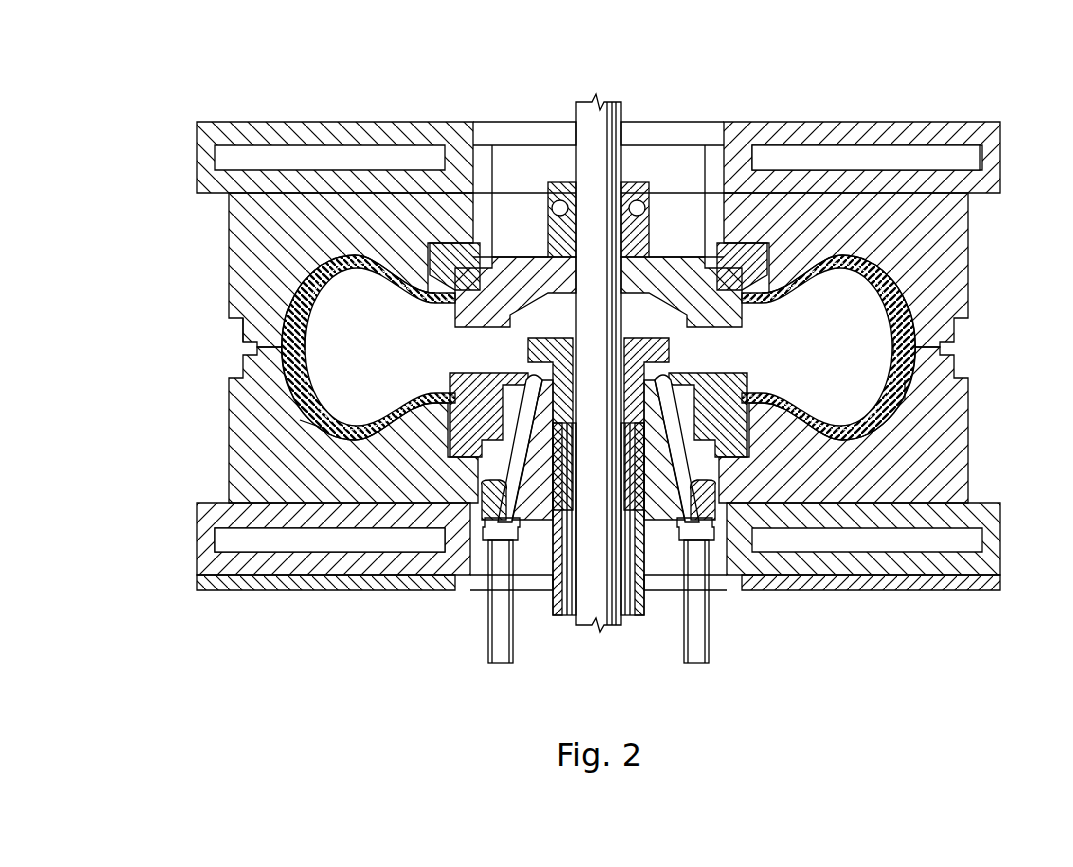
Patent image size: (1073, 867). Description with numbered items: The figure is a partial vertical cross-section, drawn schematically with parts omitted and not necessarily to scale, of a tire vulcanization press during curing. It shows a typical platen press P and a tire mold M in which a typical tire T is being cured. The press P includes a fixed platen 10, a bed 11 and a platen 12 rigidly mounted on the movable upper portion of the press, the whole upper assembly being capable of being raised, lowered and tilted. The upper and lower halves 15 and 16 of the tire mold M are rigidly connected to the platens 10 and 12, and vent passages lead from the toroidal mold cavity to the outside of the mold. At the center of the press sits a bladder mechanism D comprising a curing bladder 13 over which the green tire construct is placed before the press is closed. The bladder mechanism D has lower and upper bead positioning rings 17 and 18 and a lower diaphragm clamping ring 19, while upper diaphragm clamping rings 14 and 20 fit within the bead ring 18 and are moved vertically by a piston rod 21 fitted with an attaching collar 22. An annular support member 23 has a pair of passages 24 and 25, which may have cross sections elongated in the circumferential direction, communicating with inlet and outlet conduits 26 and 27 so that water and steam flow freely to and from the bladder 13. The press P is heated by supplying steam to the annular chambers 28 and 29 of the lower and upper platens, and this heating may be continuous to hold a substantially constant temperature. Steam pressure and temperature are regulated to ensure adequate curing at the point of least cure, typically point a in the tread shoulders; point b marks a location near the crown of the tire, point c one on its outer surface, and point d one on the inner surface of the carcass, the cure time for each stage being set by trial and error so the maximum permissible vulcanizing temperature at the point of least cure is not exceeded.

The fixed platen 10 is at (197, 541).
The bed 11 is at (958, 592).
The platen 12 is at (197, 153).
The curing bladder 13 is at (308, 367).
The upper diaphragm clamping ring 14 is at (455, 310).
The upper mold half 15 is at (229, 484).
The lower mold half 16 is at (229, 257).
The lower bead positioning ring 17 is at (432, 395).
The upper bead positioning ring 18 is at (430, 255).
The lower diaphragm clamping ring 19 is at (490, 373).
The upper diaphragm clamping ring 20 is at (492, 250).
The piston rod 21 is at (576, 107).
The attaching collar 22 is at (632, 182).
The annular support member 23 is at (542, 508).
The passage 24 is at (502, 485).
The passage 25 is at (712, 465).
The inlet conduit 26 is at (488, 648).
The outlet conduit 27 is at (682, 648).
The annular chamber 28 is at (246, 543).
The annular chamber 29 is at (958, 157).
The platen press P is at (190, 120).
The tire mold M is at (972, 350).
The bladder mechanism D is at (748, 356).
The tire T is at (322, 428).
The point in tread shoulders a is at (910, 402).
The point near crown b is at (893, 348).
The point on outer surface c is at (282, 324).
The point on inner surface d is at (304, 323).